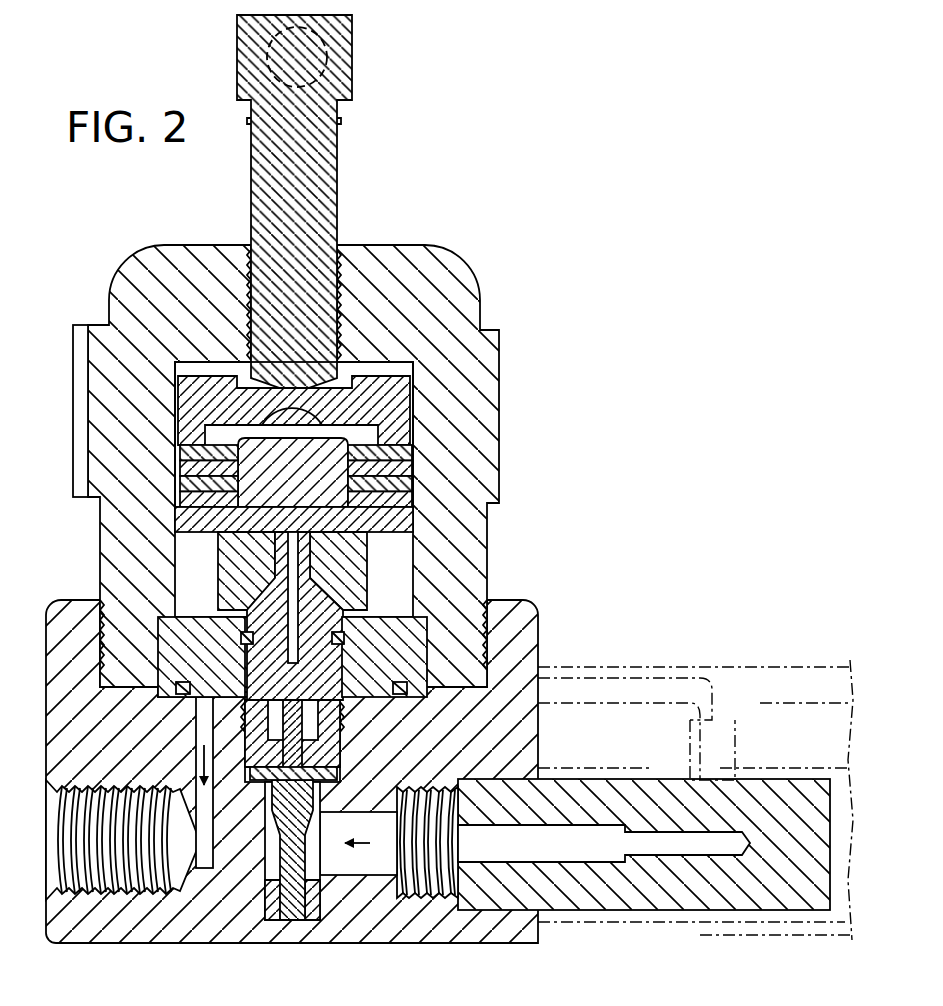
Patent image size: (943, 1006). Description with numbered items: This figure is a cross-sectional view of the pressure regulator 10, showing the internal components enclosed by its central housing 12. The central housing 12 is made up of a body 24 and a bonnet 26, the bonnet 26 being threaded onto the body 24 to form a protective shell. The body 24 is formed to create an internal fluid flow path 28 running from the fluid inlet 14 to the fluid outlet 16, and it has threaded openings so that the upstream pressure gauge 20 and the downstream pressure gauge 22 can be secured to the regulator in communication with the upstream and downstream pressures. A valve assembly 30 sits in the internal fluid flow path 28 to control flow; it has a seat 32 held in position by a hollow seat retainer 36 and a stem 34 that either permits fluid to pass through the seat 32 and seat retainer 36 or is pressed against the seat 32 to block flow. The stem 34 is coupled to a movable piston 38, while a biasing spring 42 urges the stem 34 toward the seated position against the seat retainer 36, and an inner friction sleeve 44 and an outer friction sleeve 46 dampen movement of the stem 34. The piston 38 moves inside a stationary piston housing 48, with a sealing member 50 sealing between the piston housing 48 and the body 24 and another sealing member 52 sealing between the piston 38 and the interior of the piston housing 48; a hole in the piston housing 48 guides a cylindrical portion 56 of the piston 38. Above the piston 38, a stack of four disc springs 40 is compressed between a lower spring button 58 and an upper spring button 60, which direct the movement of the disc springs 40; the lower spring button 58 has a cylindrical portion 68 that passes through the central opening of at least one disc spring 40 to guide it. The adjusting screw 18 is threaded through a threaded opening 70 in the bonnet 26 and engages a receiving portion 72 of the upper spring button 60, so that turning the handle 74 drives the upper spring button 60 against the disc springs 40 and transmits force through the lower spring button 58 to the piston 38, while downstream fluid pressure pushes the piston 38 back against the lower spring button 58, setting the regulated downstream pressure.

The pressure regulator 10 is at (548, 128).
The central housing 12 is at (518, 563).
The fluid inlet 14 is at (655, 912).
The fluid outlet 16 is at (75, 850).
The adjusting screw 18 is at (322, 162).
The upstream pressure gauge 20 is at (775, 700).
The downstream pressure gauge 22 is at (695, 660).
The body 24 is at (46, 650).
The bonnet 26 is at (109, 300).
The internal fluid flow path 28 is at (205, 795).
The valve assembly 30 is at (250, 800).
The seat 32 is at (337, 775).
The stem 34 is at (290, 925).
The seat retainer 36 is at (340, 742).
The movable piston 38 is at (232, 592).
The disc springs 40 is at (400, 499).
The biasing spring 42 is at (270, 870).
The inner friction sleeve 44 is at (300, 870).
The outer friction sleeve 46 is at (375, 858).
The piston housing 48 is at (420, 614).
The sealing member 50 is at (183, 698).
The sealing member 52 is at (241, 641).
The cylindrical portion 56 is at (420, 520).
The lower spring button 58 is at (178, 520).
The upper spring button 60 is at (408, 400).
The cylindrical portion 68 is at (310, 470).
The threaded opening 70 is at (210, 245).
The receiving portion 72 is at (255, 380).
The handle 74 is at (352, 60).